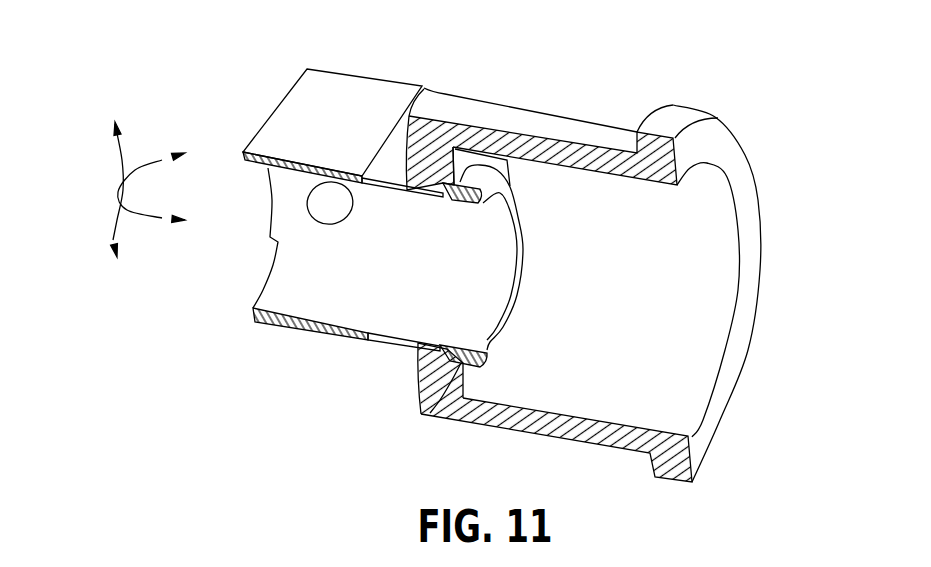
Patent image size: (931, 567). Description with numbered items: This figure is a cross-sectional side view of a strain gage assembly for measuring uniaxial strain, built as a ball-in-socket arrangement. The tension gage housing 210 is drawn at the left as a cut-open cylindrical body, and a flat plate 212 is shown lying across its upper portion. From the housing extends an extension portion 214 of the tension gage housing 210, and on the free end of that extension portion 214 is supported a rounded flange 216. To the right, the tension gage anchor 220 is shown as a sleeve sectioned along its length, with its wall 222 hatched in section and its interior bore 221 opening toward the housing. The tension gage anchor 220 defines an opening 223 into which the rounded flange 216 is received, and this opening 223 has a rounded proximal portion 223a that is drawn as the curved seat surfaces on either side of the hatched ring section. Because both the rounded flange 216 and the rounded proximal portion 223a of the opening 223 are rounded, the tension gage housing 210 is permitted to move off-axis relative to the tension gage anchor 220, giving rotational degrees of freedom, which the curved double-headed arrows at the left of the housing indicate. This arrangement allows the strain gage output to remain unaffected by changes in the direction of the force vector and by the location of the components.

The tension gage housing 210 is at (268, 61).
The plate 212 is at (325, 95).
The extension portion 214 is at (388, 335).
The rounded flange 216 is at (461, 147).
The tension gage anchor 220 is at (679, 72).
The bore 221 is at (592, 233).
The sleeve wall 222 is at (543, 123).
The opening 223 is at (408, 117).
The rounded proximal portion 223a is at (428, 412).